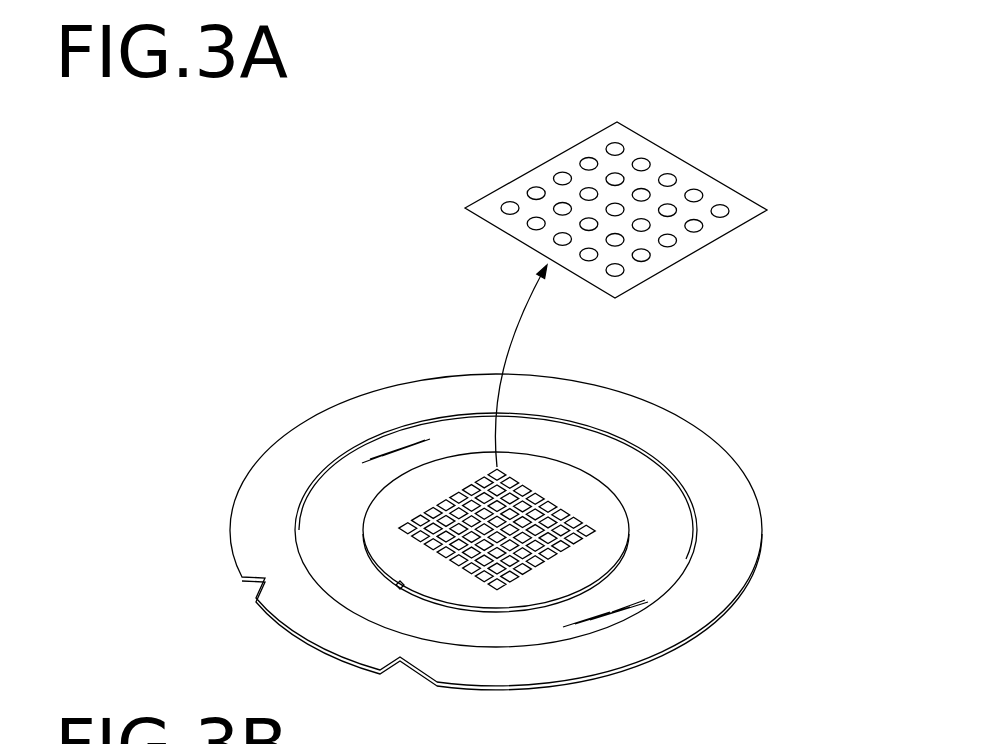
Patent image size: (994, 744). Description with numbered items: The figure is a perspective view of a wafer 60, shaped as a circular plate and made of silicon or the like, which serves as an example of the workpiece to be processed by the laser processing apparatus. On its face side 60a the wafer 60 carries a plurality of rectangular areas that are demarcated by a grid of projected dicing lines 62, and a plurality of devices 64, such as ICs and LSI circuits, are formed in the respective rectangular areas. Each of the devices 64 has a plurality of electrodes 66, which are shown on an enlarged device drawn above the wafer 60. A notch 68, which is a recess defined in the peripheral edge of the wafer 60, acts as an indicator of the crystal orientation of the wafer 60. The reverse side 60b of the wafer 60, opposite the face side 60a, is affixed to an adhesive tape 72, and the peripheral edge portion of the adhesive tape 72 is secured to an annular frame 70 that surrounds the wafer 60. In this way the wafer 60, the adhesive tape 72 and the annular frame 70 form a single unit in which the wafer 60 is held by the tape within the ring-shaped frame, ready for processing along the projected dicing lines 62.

The wafer 60 is at (440, 534).
The face side 60a is at (390, 517).
The reverse side 60b is at (496, 612).
The projected dicing lines 62 is at (543, 493).
The devices 64 is at (700, 252).
The electrodes 66 is at (697, 190).
The notch 68 is at (400, 588).
The annular frame 70 is at (738, 518).
The adhesive tape 72 is at (667, 510).